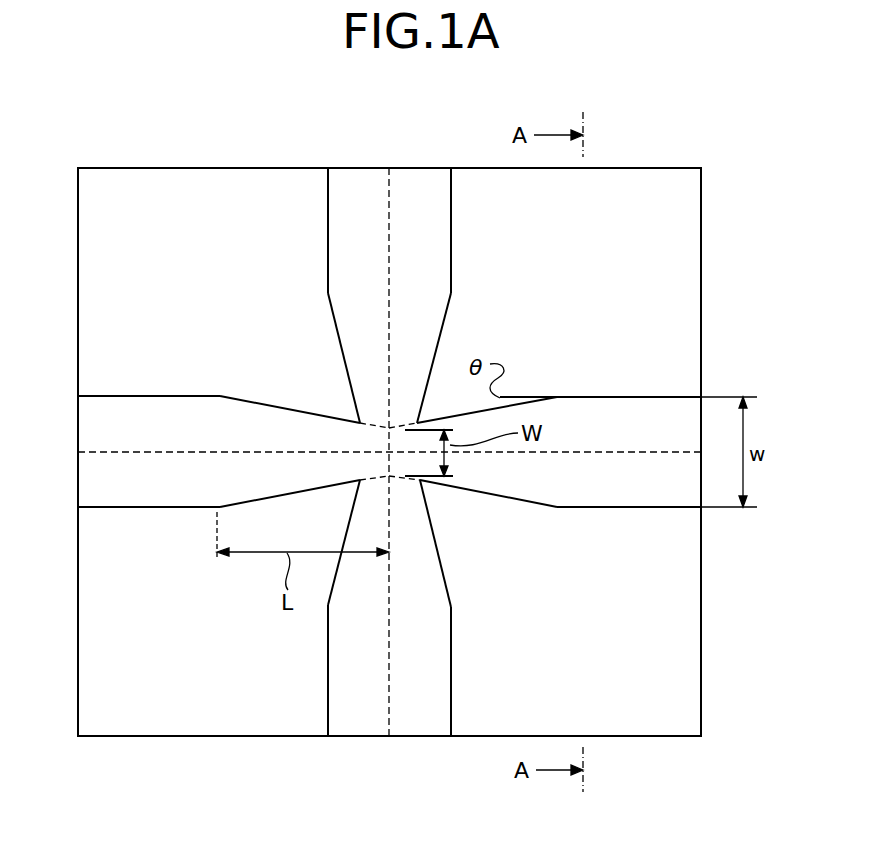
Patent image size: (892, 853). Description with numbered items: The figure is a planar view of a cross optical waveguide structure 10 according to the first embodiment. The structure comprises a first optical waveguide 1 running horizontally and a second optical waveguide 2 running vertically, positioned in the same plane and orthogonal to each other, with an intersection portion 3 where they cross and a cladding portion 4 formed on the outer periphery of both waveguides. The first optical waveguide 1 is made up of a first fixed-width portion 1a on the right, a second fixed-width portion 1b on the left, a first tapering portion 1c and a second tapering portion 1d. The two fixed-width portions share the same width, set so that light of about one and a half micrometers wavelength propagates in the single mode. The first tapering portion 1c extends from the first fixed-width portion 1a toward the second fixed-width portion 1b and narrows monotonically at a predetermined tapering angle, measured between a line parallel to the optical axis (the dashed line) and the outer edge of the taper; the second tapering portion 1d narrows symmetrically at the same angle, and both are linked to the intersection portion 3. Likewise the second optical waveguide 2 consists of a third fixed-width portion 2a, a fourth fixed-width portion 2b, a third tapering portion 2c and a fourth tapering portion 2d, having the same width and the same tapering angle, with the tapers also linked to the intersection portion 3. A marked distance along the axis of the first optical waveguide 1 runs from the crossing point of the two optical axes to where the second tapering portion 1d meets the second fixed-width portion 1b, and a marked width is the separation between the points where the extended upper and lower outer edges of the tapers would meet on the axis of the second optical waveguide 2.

The cross optical waveguide structure 10 is at (422, 409).
The cladding portion 4 is at (701, 178).
The first optical waveguide 1 is at (389, 419).
The first fixed-width portion 1a is at (617, 397).
The second fixed-width portion 1b is at (143, 396).
The first tapering portion 1c is at (493, 495).
The second tapering portion 1d is at (262, 405).
The second optical waveguide 2 is at (441, 452).
The third fixed-width portion 2a is at (451, 250).
The fourth fixed-width portion 2b is at (451, 667).
The third tapering portion 2c is at (445, 328).
The fourth tapering portion 2d is at (448, 582).
The intersection portion 3 is at (335, 390).